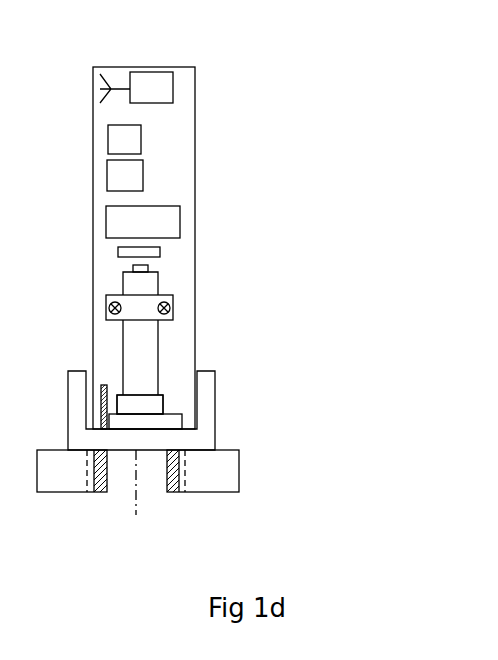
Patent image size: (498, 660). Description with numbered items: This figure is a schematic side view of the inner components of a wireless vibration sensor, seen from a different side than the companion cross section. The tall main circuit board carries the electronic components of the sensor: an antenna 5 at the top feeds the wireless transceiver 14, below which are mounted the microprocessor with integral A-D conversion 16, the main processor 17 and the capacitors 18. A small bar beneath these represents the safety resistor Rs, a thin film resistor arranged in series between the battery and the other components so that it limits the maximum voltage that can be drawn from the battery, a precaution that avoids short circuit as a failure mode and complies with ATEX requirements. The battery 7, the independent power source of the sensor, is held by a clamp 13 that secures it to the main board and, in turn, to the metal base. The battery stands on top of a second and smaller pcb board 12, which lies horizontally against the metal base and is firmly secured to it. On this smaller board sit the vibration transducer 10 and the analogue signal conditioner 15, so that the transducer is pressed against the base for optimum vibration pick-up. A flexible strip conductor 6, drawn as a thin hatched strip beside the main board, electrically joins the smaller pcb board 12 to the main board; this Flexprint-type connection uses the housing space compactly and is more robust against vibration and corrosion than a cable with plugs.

The antenna 5 is at (83, 72).
The wireless transceiver 14 is at (163, 76).
The microprocessor with integral A-D conversion 16 is at (137, 139).
The main processor 17 is at (137, 178).
The capacitors 18 is at (171, 219).
The safety resistor Rs is at (166, 251).
The clamp 13 is at (107, 295).
The battery 7 is at (158, 334).
The flexible strip conductor 6 is at (97, 390).
The vibration transducer 10 is at (150, 402).
The analogue signal conditioner 15 is at (222, 381).
The second pcb board 12 is at (172, 419).